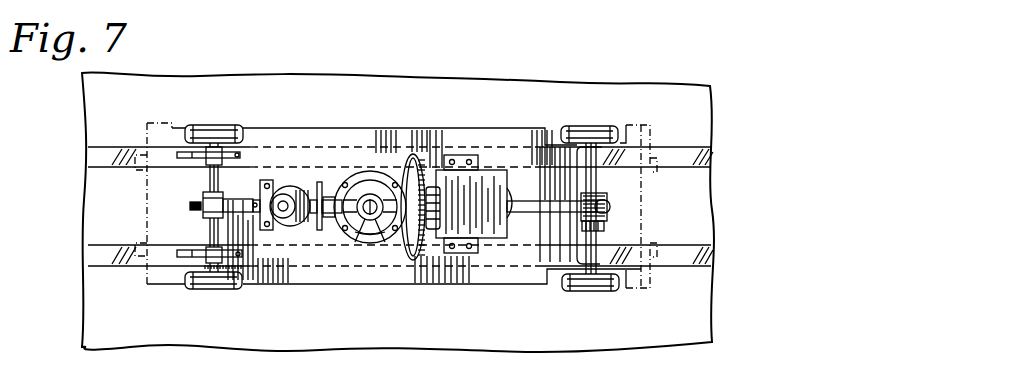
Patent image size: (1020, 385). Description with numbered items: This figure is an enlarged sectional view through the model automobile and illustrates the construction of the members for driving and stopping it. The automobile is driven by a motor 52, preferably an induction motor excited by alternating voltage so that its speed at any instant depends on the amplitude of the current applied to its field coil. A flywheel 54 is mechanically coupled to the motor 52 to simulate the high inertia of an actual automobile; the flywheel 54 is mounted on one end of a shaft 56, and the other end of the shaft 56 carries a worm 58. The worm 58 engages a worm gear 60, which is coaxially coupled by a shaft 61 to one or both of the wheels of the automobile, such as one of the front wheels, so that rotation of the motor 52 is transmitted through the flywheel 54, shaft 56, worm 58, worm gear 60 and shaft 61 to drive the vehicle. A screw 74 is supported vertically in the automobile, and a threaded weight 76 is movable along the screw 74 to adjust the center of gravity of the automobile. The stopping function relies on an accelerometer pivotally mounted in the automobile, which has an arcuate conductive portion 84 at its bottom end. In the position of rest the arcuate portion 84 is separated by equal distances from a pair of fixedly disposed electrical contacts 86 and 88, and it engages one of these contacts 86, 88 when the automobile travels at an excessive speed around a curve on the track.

The motor 52 is at (490, 176).
The flywheel 54 is at (418, 160).
The shaft 56 is at (523, 212).
The worm 58 is at (600, 207).
The worm gear 60 is at (594, 223).
The shaft 61 is at (591, 181).
The screw 74 is at (379, 242).
The threaded weight 76 is at (356, 238).
The arcuate conductive portion 84 is at (324, 182).
The electrical contact 86 is at (341, 160).
The electrical contact 88 is at (338, 257).